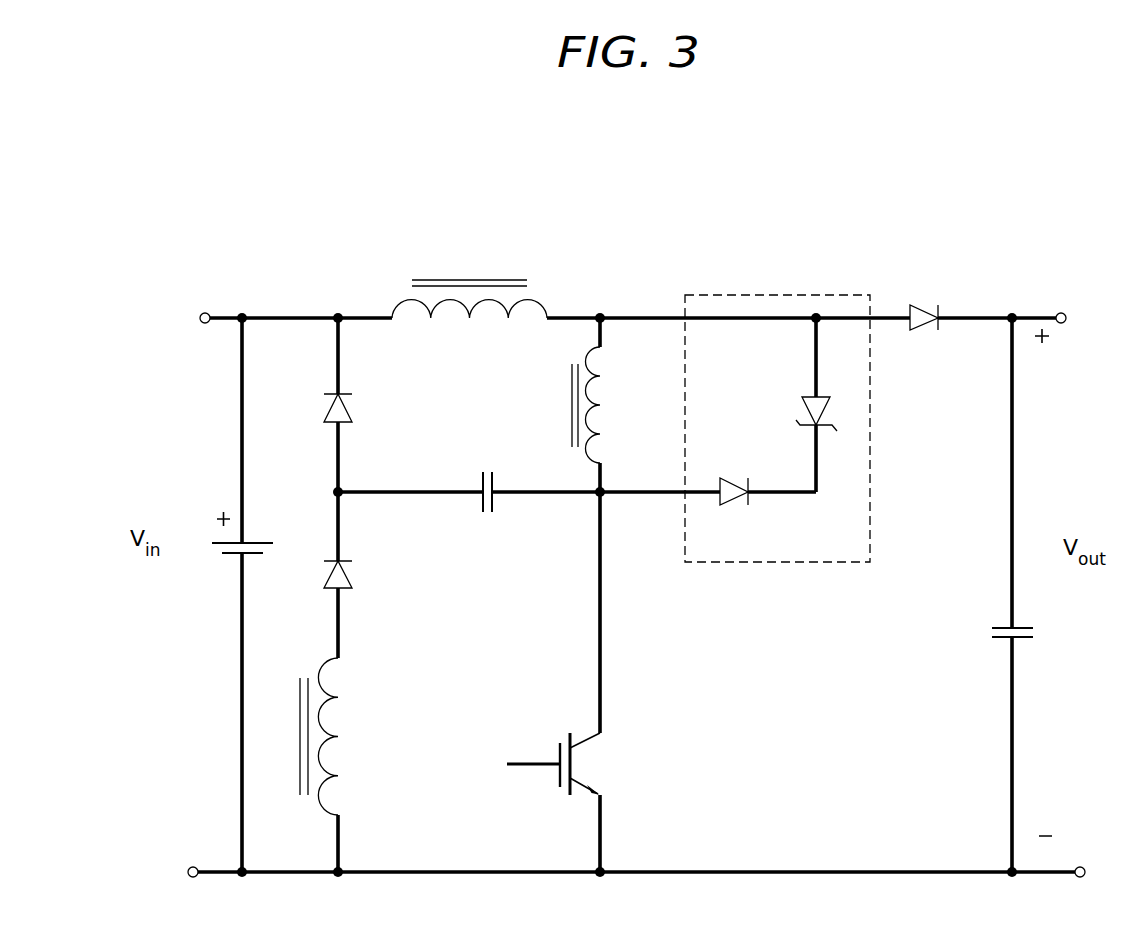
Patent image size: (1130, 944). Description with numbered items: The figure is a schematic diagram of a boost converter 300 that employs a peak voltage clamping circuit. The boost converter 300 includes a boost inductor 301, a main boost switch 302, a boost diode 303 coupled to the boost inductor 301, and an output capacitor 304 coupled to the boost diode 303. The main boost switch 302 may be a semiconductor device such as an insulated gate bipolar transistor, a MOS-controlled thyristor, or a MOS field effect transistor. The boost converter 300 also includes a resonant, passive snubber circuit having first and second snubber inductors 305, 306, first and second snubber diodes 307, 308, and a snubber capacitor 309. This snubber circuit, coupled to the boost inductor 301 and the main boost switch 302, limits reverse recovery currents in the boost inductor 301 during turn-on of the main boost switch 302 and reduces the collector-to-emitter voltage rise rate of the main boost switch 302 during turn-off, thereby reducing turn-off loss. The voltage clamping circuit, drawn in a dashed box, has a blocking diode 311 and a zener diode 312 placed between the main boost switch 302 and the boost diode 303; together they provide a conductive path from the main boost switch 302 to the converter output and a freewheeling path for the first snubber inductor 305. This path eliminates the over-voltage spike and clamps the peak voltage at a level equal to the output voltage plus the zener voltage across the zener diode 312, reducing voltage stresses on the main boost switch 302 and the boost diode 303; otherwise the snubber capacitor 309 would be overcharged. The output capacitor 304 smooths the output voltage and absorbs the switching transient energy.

The boost converter 300 is at (777, 347).
The boost inductor 301 is at (468, 280).
The main boost switch 302 is at (560, 744).
The boost diode 303 is at (922, 332).
The output capacitor 304 is at (1035, 636).
The first snubber inductor 305 is at (603, 397).
The second snubber inductor 306 is at (340, 718).
The first snubber diode 307 is at (352, 578).
The second snubber diode 308 is at (352, 411).
The snubber capacitor 309 is at (487, 514).
The blocking diode 311 is at (735, 505).
The zener diode 312 is at (802, 416).